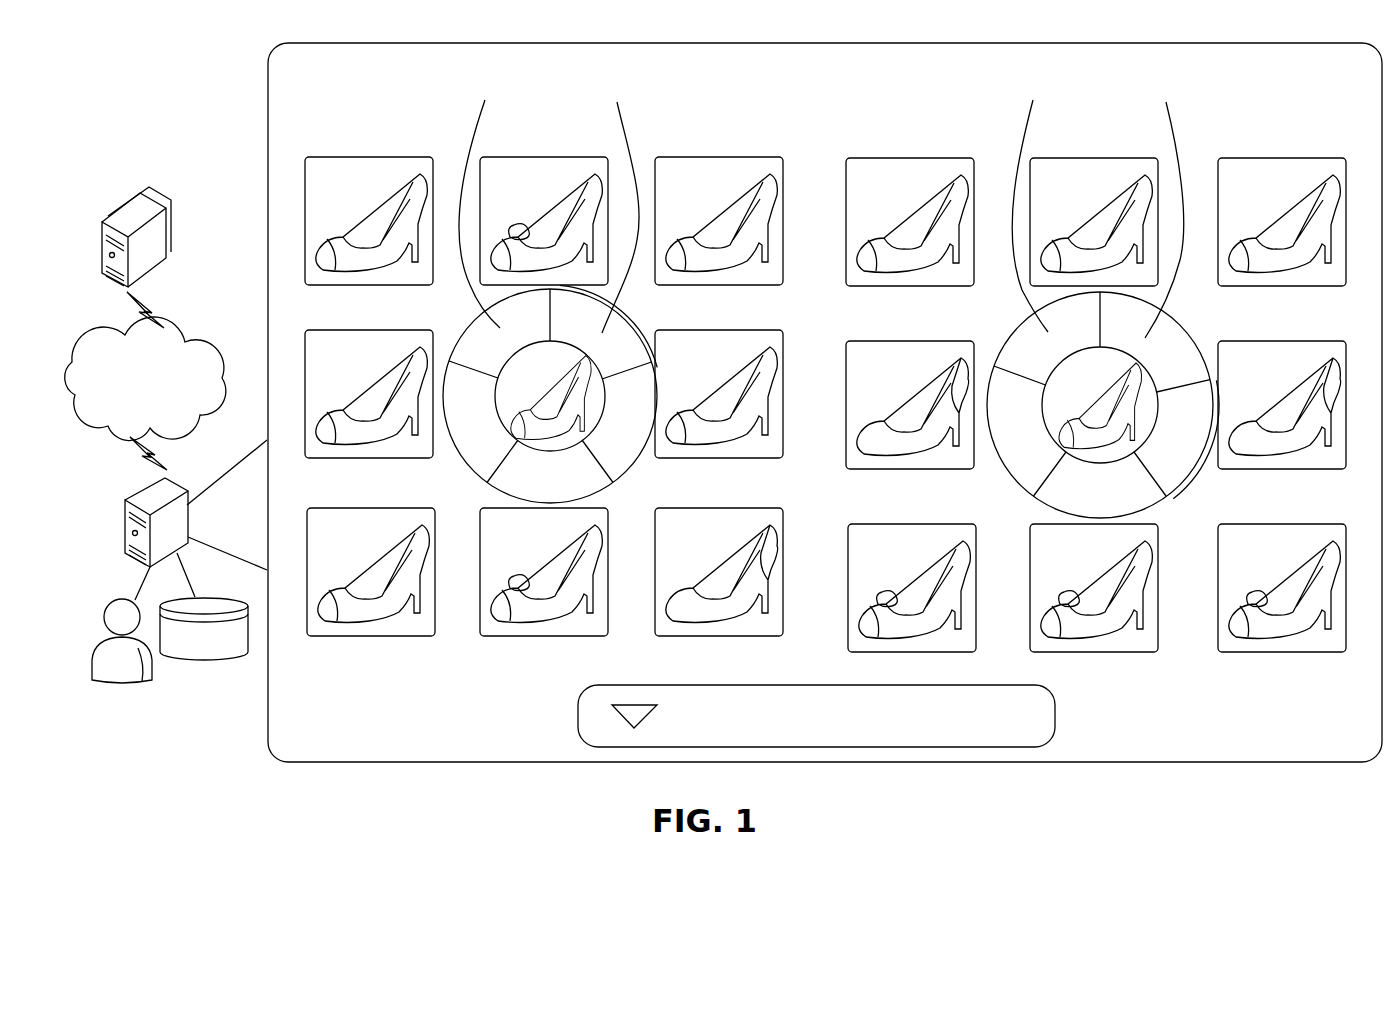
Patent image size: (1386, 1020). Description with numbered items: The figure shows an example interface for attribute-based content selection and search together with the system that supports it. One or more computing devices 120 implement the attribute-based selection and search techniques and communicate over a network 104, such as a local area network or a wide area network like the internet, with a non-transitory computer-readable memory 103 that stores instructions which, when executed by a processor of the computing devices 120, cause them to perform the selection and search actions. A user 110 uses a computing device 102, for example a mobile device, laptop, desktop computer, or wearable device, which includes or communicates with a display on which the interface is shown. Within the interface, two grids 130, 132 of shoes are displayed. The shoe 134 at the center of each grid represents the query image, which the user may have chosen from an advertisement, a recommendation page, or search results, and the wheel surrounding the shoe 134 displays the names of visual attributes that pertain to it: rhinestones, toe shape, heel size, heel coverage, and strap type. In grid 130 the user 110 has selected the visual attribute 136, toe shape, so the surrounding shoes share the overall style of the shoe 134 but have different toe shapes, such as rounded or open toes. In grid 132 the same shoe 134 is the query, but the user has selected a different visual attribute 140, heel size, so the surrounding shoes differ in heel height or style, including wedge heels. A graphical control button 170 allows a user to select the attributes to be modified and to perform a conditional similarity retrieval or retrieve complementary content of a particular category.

The computing device 102 is at (125, 505).
The non-transitory computer-readable memory 103 is at (204, 629).
The network 104 is at (88, 367).
The user 110 is at (103, 611).
The computing devices 120 is at (118, 208).
The grid 130 is at (440, 136).
The grid 132 is at (904, 134).
The shoe 134 is at (860, 298).
The visual attribute 136 is at (645, 322).
The visual attribute 140 is at (1204, 486).
The graphical control button 170 is at (571, 691).